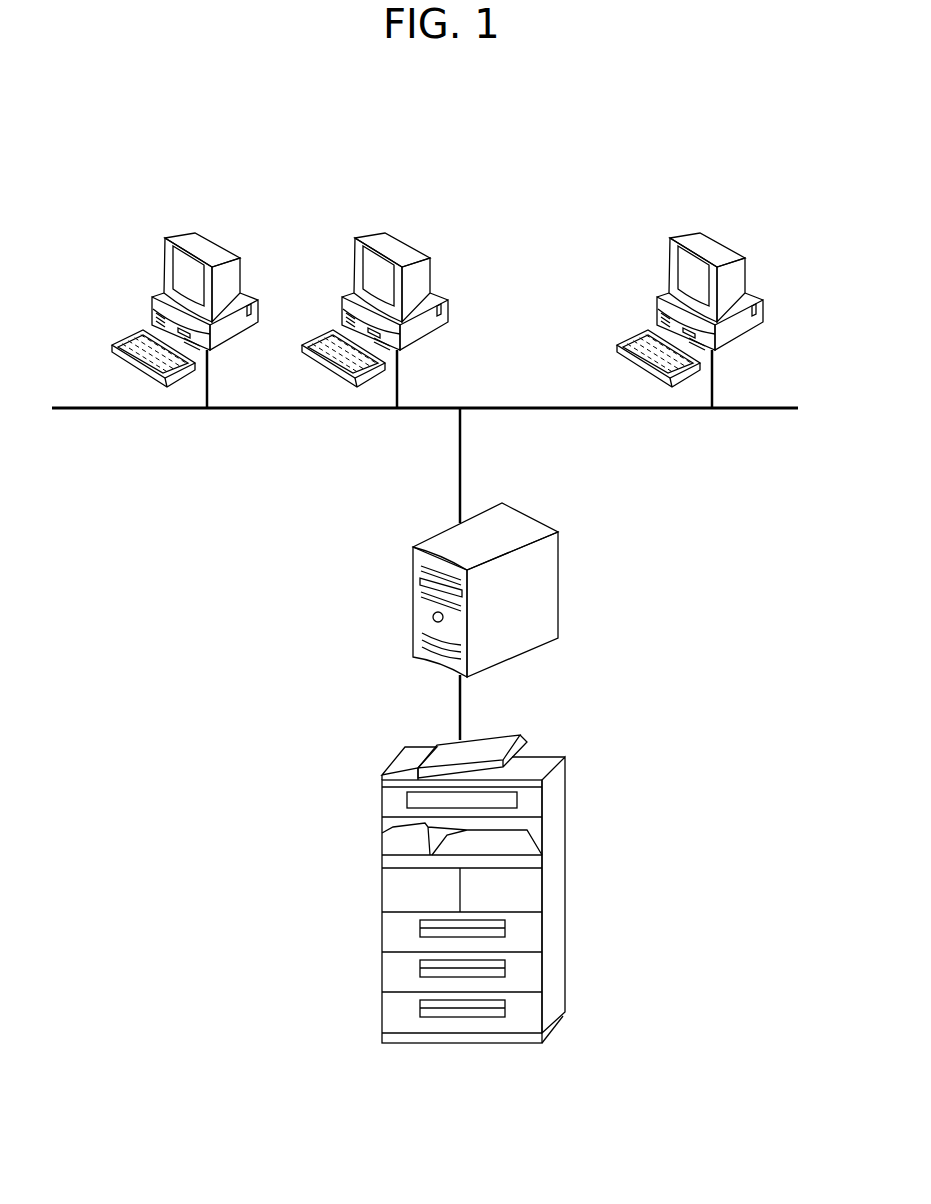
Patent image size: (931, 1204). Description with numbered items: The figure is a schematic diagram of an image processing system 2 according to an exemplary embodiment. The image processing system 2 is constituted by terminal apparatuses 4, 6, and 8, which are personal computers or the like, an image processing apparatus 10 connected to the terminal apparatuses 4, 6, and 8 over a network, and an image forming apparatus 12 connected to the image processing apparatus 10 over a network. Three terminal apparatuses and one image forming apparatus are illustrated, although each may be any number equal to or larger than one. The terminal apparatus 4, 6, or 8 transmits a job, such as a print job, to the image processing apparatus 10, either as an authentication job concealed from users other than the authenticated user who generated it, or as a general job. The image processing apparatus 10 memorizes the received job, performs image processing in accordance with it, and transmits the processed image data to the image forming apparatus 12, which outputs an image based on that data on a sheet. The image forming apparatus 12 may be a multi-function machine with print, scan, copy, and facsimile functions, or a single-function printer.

The image processing system 2 is at (563, 108).
The terminal apparatus 4 is at (233, 246).
The terminal apparatus 6 is at (422, 246).
The terminal apparatus 8 is at (736, 246).
The image processing apparatus 10 is at (559, 568).
The image forming apparatus 12 is at (565, 818).